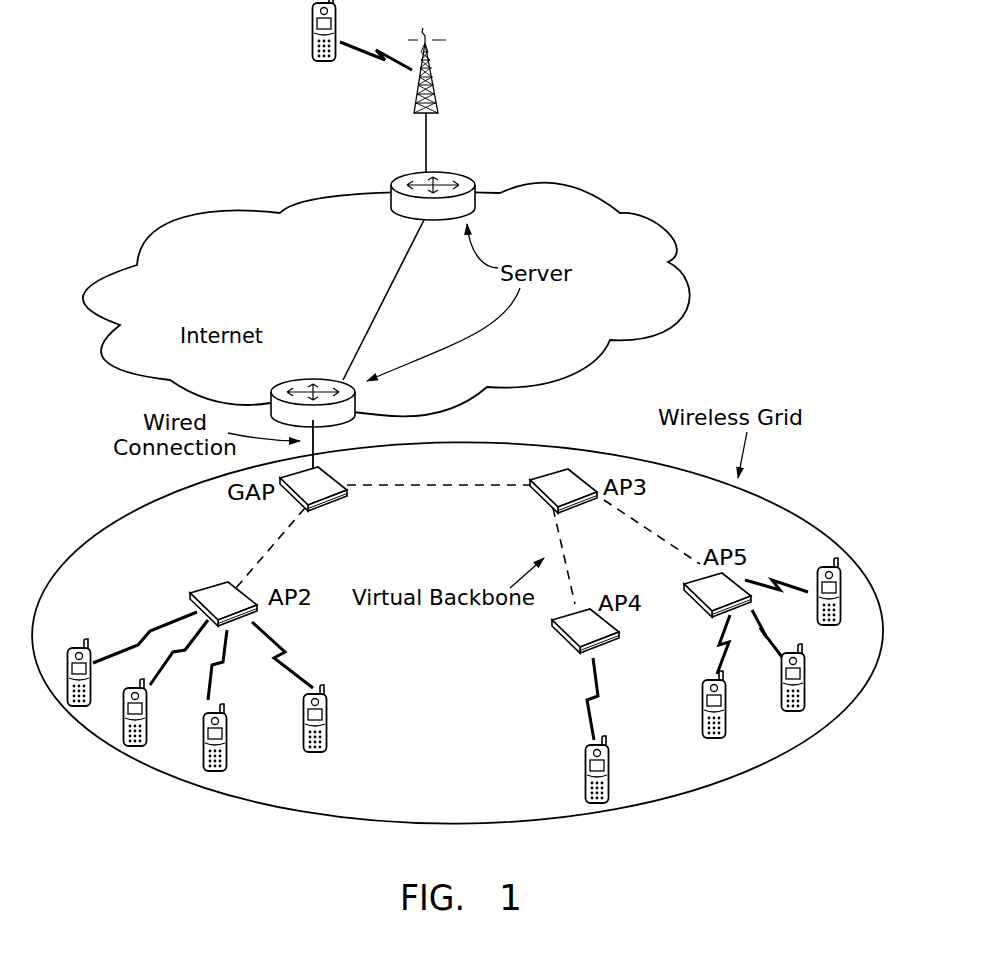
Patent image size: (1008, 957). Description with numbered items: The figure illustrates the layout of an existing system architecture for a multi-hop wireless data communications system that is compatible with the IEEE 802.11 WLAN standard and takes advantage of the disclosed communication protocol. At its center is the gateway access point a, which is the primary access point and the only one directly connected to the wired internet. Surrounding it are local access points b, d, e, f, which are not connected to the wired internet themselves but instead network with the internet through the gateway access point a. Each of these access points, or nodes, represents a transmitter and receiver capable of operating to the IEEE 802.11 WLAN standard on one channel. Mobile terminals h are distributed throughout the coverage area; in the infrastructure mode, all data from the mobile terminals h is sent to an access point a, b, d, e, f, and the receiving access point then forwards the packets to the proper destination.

The gateway access point a is at (340, 504).
The local access point b is at (585, 468).
The local access point d is at (193, 581).
The local access point e is at (554, 638).
The local access point f is at (743, 570).
The mobile terminal h is at (300, 46).